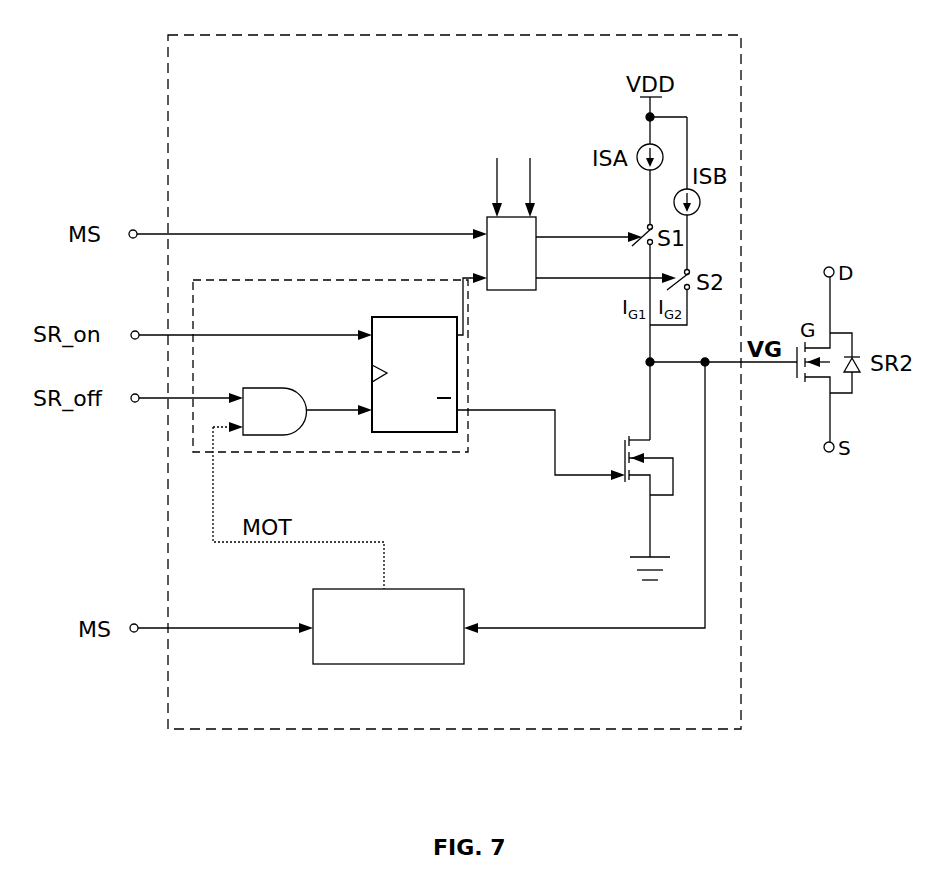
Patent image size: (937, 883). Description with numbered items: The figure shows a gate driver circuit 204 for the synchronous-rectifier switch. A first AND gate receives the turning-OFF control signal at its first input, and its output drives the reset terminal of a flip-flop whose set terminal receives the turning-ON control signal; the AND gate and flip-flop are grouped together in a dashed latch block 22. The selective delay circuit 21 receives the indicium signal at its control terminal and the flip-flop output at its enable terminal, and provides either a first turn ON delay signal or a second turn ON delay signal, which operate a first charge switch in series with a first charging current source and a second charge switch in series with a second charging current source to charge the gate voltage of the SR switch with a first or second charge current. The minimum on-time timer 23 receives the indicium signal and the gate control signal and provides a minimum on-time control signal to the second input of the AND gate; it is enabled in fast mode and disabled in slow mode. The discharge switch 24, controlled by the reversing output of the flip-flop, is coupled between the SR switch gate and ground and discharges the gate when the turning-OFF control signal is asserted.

The gate driver circuit 204 is at (454, 382).
The selective delay circuit 21 is at (574, 186).
The latch circuit 22 is at (400, 453).
The minimum on-time timer 23 is at (382, 665).
The discharge switch 24 is at (633, 483).